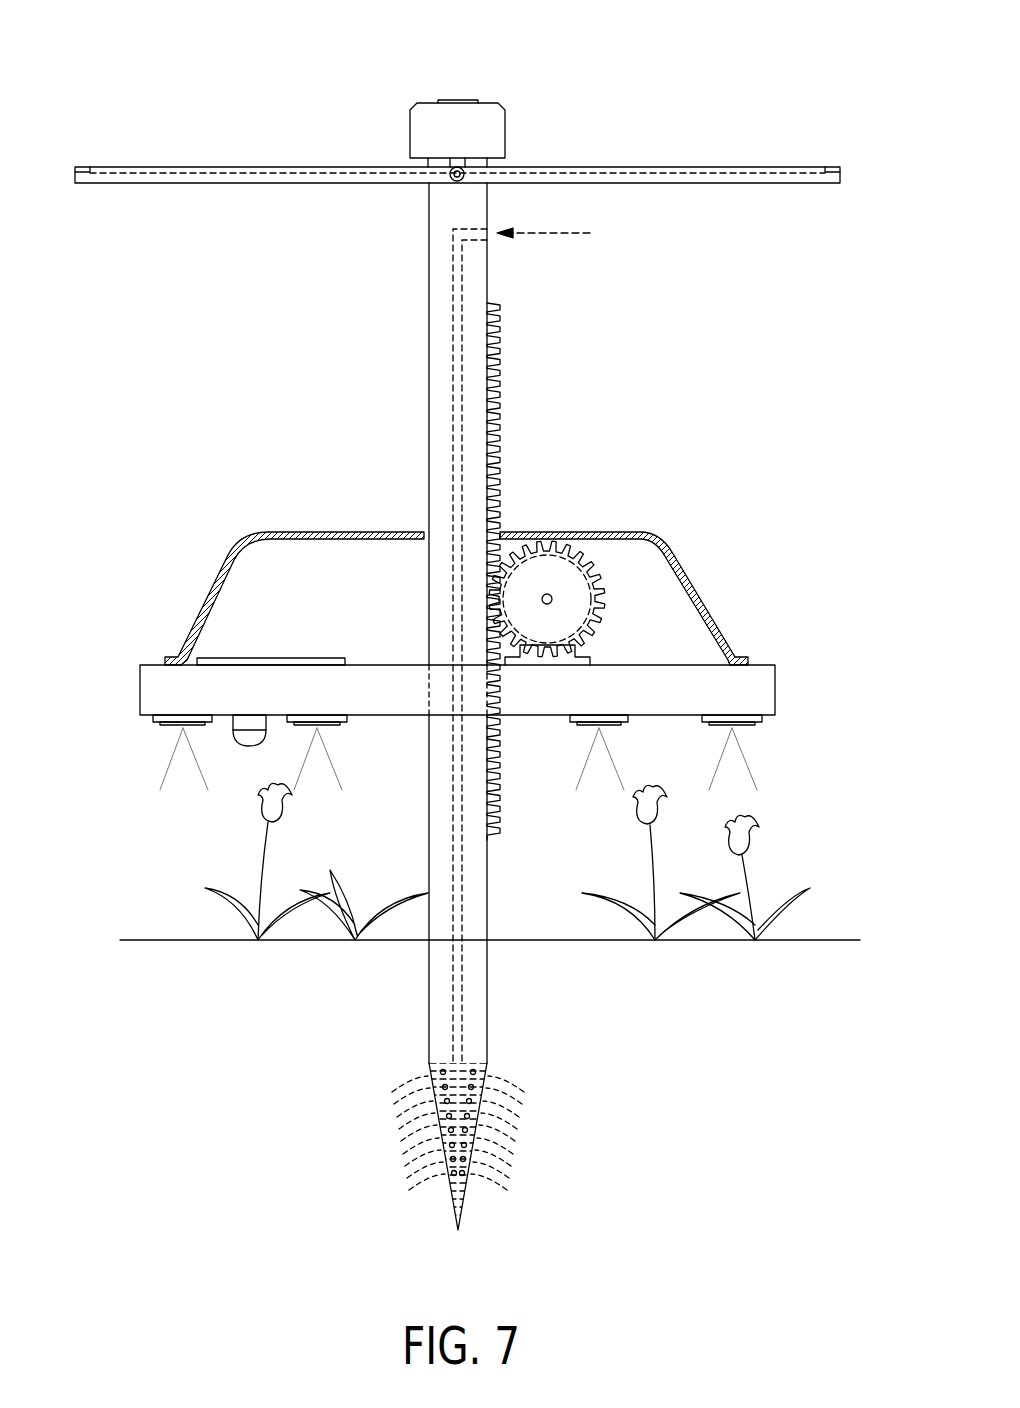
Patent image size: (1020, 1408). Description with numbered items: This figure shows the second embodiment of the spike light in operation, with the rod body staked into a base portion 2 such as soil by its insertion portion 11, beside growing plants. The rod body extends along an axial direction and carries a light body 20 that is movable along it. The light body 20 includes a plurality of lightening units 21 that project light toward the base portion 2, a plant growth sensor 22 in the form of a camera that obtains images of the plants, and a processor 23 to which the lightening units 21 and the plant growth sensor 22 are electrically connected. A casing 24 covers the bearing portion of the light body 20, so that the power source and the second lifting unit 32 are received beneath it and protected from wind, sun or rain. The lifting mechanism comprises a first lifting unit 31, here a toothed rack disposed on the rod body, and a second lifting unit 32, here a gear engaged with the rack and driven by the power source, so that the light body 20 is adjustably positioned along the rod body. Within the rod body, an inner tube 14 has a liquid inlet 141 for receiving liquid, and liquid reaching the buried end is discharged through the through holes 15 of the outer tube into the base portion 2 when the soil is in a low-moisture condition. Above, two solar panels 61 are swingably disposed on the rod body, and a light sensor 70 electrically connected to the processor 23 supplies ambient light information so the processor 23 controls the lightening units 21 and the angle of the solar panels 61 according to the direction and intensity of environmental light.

The light sensor 70 is at (458, 100).
The solar panels 61 is at (267, 167).
The liquid inlet 141 is at (497, 236).
The inner tube 14 is at (463, 338).
The first lifting unit 31 is at (490, 400).
The second lifting unit 32 is at (590, 566).
The casing 24 is at (350, 532).
The processor 23 is at (257, 660).
The light body 20 is at (748, 630).
The lightening unit 21 is at (148, 733).
The plant growth sensor 22 is at (250, 742).
The base portion 2 is at (818, 950).
The through holes 15 is at (470, 1150).
The insertion portion 11 is at (487, 1085).